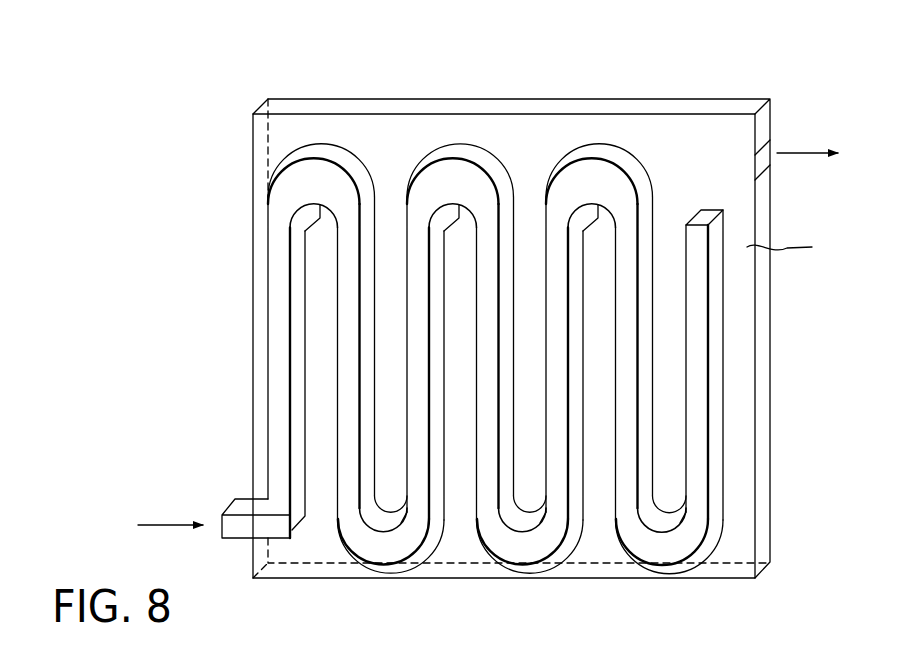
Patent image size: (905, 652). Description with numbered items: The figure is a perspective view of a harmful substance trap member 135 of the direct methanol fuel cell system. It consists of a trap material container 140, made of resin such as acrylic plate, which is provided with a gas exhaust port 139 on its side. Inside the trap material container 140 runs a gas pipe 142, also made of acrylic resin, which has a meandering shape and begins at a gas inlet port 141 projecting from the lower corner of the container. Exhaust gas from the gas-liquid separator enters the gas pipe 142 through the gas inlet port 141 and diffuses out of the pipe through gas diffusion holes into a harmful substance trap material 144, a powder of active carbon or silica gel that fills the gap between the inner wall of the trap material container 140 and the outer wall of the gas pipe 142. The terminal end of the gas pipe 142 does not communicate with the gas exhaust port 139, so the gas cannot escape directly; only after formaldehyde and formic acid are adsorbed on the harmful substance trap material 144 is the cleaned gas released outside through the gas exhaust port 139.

The harmful substance trap member 135 is at (497, 299).
The trap material container 140 is at (690, 107).
The gas exhaust port 139 is at (759, 168).
The harmful substance trap material 144 is at (801, 248).
The gas pipe 142 is at (720, 326).
The gas inlet port 141 is at (222, 532).